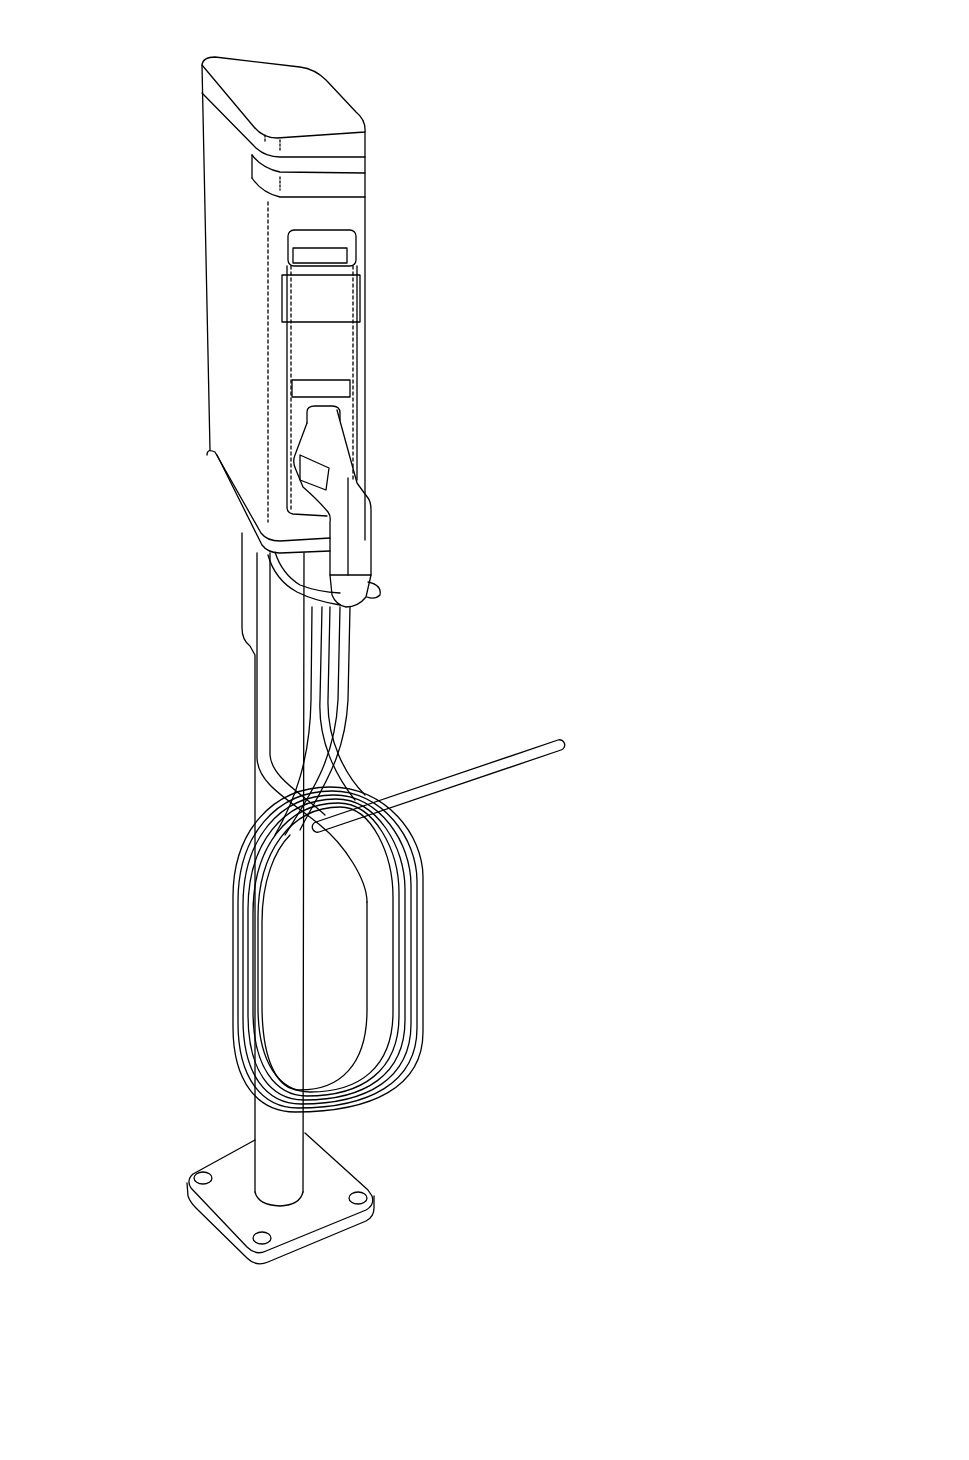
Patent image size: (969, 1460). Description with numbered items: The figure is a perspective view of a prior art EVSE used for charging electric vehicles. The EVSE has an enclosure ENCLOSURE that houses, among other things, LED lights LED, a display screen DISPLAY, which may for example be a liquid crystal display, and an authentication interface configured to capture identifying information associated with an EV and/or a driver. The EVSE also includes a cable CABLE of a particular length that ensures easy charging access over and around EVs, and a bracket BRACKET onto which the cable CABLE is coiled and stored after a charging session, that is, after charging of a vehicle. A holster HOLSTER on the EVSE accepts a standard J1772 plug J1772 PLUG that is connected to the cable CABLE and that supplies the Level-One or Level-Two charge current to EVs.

The element EVSE is at (365, 83).
The enclosure ENCLOSURE is at (203, 183).
The LED lights LED is at (358, 183).
The display screen DISPLAY is at (347, 258).
The holster HOLSTER is at (332, 420).
The J1772 plug J1772 PLUG is at (377, 519).
The bracket BRACKET is at (498, 779).
The cable CABLE is at (427, 902).